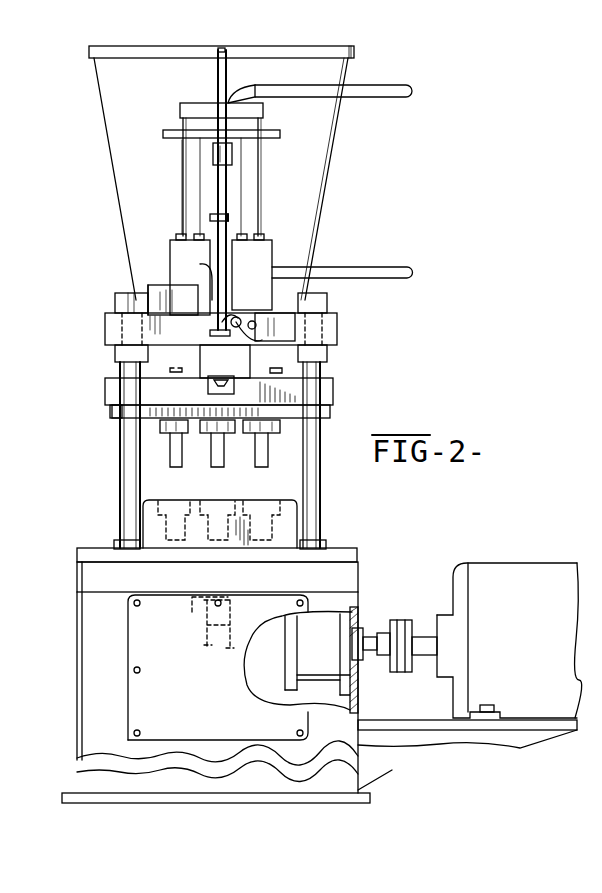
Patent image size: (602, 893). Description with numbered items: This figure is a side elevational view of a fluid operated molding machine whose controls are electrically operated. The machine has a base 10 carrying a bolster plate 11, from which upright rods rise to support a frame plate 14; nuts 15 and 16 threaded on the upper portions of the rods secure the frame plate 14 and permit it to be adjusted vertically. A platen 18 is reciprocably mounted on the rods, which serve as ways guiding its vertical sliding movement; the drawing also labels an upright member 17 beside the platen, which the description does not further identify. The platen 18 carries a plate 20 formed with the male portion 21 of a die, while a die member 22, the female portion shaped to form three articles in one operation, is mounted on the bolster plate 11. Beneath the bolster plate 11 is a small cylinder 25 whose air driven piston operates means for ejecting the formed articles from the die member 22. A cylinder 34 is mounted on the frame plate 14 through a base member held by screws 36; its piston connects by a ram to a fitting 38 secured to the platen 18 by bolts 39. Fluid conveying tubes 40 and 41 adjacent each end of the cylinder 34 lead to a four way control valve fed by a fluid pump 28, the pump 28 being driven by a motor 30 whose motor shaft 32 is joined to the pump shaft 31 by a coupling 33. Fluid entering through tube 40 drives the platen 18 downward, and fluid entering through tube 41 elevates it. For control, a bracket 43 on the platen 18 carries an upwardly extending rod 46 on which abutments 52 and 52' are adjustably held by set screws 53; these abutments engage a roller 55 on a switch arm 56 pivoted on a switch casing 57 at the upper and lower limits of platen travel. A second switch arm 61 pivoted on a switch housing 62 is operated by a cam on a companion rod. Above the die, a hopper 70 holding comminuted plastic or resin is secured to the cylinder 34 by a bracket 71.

The base 10 is at (72, 651).
The bolster plate 11 is at (345, 566).
The frame plate 14 is at (337, 331).
The nut 15 is at (115, 352).
The nut 16 is at (115, 300).
The column 17 is at (318, 445).
The platen 18 is at (333, 392).
The plate 20 is at (113, 420).
The male die portion 21 is at (265, 453).
The die member 22 is at (292, 525).
The cylinder 25 is at (206, 632).
The fluid pump 28 is at (330, 668).
The motor 30 is at (570, 568).
The pump shaft 31 is at (372, 637).
The motor shaft 32 is at (428, 637).
The coupling 33 is at (398, 620).
The cylinder 34 is at (258, 170).
The screws 36 is at (199, 234).
The fitting 38 is at (206, 363).
The bolts 39 is at (282, 372).
The fluid conveying tube 40 is at (405, 82).
The fluid conveying tube 41 is at (372, 277).
The bracket 43 is at (208, 392).
The rod 46 is at (217, 184).
The abutment 52 is at (256, 200).
The abutment 52' is at (200, 334).
The set screws 53 is at (229, 217).
The roller 55 is at (238, 318).
The switch arm 56 is at (242, 330).
The switch casing 57 is at (282, 322).
The switch arm 61 is at (195, 274).
The switch housing 62 is at (160, 300).
The hopper 70 is at (112, 161).
The bracket 71 is at (270, 136).